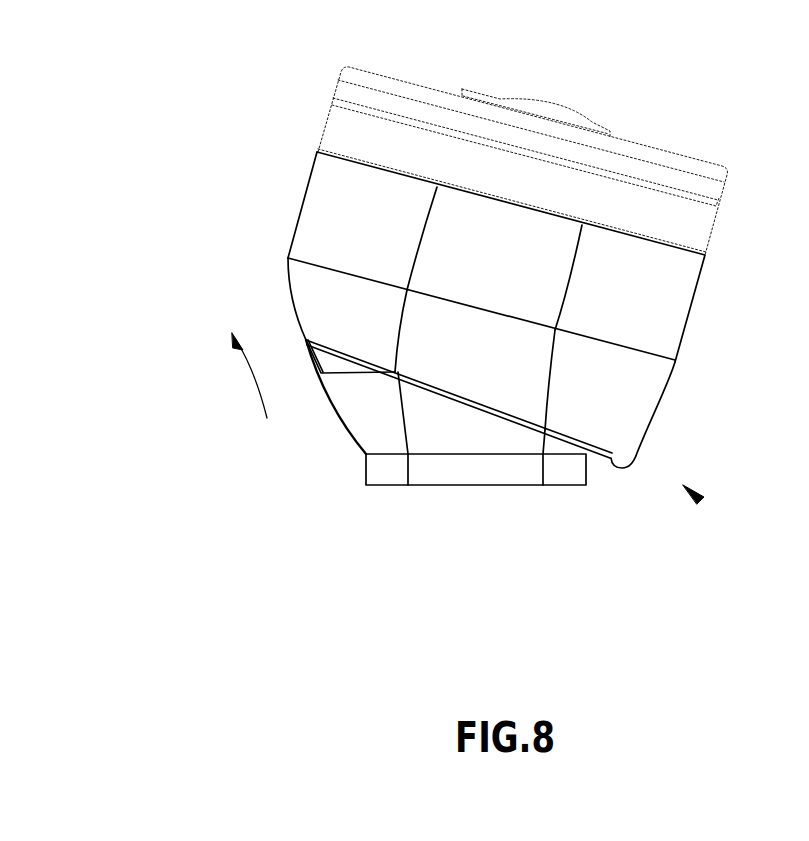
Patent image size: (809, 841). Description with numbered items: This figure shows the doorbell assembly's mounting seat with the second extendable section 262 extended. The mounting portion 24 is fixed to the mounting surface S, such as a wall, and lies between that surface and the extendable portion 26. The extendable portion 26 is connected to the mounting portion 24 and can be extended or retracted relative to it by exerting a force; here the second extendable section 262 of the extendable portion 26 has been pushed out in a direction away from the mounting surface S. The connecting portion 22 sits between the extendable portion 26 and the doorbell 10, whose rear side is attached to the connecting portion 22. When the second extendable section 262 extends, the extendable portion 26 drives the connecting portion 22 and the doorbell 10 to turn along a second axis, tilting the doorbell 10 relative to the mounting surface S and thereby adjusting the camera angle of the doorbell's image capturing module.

The doorbell 10 is at (357, 136).
The connecting portion 22 is at (330, 194).
The extendable portion 26 is at (313, 297).
The second extendable section 262 is at (355, 398).
The mounting portion 24 is at (488, 465).
The mounting surface S is at (700, 500).